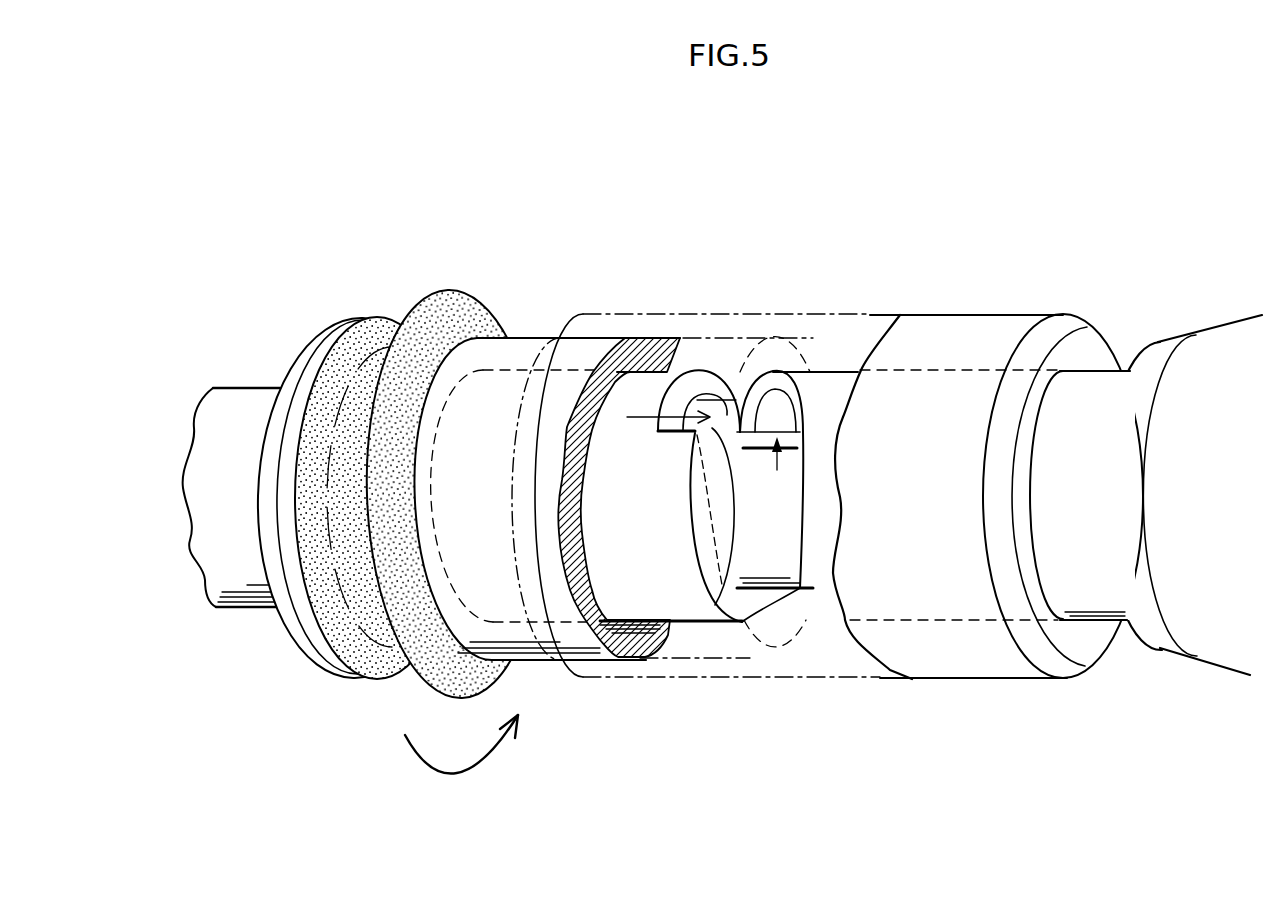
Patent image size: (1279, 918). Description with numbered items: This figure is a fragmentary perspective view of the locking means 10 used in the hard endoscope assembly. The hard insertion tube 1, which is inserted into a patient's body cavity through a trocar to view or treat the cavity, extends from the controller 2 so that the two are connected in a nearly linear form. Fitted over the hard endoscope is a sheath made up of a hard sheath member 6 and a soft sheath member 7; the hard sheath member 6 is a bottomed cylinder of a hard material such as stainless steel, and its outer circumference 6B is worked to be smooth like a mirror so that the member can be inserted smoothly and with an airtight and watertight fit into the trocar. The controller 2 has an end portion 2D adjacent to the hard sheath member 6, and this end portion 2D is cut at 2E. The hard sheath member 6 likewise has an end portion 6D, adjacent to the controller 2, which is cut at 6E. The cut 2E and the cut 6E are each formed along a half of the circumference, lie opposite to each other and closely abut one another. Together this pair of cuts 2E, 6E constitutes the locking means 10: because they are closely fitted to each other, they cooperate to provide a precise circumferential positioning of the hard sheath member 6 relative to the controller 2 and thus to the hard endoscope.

The hard insertion tube 1 is at (755, 470).
The controller 2 is at (1220, 649).
The end portion of the controller 2D is at (1080, 402).
The cut 2E is at (777, 470).
The hard sheath member 6 is at (262, 388).
The outer circumference 6B is at (248, 607).
The end portion of the hard sheath member 6D is at (627, 583).
The cut 6E is at (700, 433).
The soft sheath member 7 is at (470, 312).
The locking means 10 is at (848, 796).